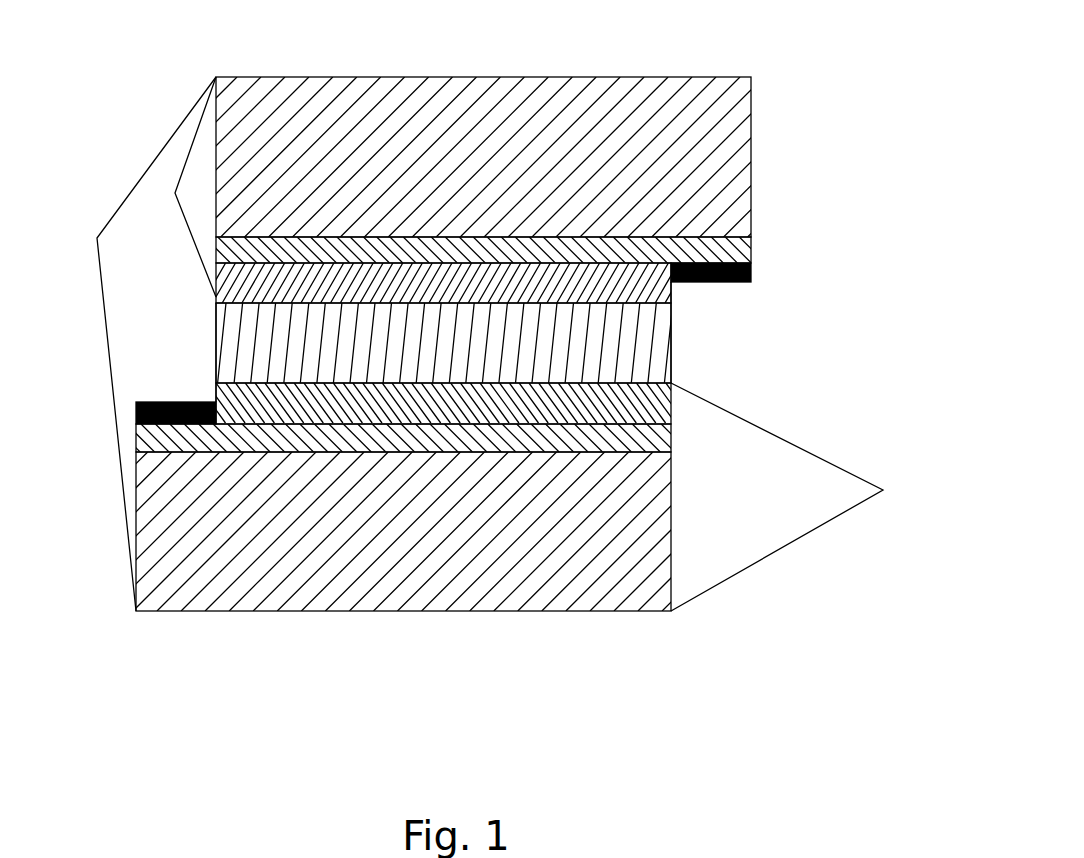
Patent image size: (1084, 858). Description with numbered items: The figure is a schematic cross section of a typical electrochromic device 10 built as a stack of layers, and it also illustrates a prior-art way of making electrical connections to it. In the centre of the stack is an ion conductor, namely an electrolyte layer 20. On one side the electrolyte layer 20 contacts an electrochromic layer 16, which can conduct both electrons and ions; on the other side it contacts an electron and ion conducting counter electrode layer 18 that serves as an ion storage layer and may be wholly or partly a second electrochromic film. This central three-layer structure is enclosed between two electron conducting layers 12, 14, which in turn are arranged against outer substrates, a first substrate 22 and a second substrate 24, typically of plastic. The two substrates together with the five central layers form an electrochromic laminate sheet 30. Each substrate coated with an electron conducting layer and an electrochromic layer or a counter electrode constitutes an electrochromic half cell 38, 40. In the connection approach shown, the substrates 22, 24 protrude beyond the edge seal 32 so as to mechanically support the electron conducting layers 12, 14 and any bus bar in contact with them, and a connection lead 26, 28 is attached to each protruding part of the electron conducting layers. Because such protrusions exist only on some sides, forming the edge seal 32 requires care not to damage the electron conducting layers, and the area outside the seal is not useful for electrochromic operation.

The electrochromic device 10 is at (810, 80).
The electron conducting layer 12 is at (220, 250).
The electron conducting layer 14 is at (655, 440).
The electrochromic layer 16 is at (240, 287).
The counter electrode layer 18 is at (650, 420).
The electrolyte layer 20 is at (655, 346).
The first substrate 22 is at (318, 90).
The second substrate 24 is at (436, 611).
The connection lead 26 is at (752, 282).
The connection lead 28 is at (136, 414).
The electrochromic laminate sheet 30 is at (138, 344).
The edge seal 32 is at (216, 355).
The electrochromic half cell 38 is at (179, 187).
The electrochromic half cell 40 is at (798, 497).